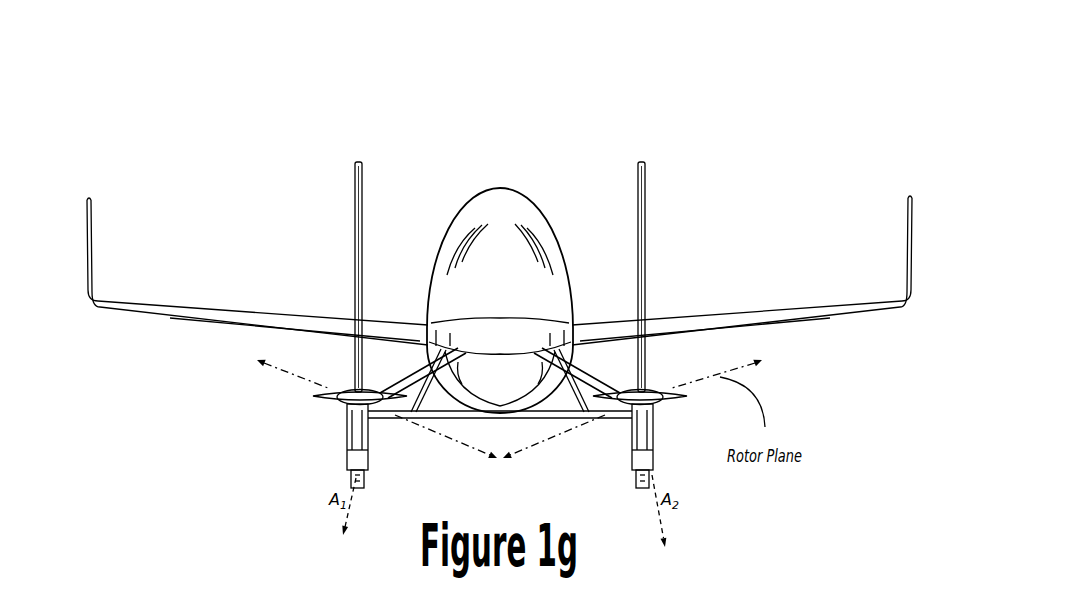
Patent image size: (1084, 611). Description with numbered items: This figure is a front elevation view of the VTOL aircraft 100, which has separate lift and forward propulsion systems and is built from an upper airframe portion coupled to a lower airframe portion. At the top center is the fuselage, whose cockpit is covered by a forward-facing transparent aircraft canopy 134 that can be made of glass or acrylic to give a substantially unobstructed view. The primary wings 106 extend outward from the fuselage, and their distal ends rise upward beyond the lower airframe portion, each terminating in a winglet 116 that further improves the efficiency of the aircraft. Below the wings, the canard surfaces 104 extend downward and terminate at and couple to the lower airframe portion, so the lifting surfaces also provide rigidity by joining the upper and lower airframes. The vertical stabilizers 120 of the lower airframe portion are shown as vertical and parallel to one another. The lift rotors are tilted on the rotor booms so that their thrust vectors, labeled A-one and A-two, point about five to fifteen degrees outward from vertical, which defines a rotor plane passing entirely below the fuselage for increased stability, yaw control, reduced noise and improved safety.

The VTOL aircraft 100 is at (168, 127).
The canard surfaces 104 is at (403, 367).
The primary wings 106 is at (261, 304).
The winglet 116 is at (84, 246).
The vertical stabilizers 120 is at (360, 153).
The aircraft canopy 134 is at (507, 185).